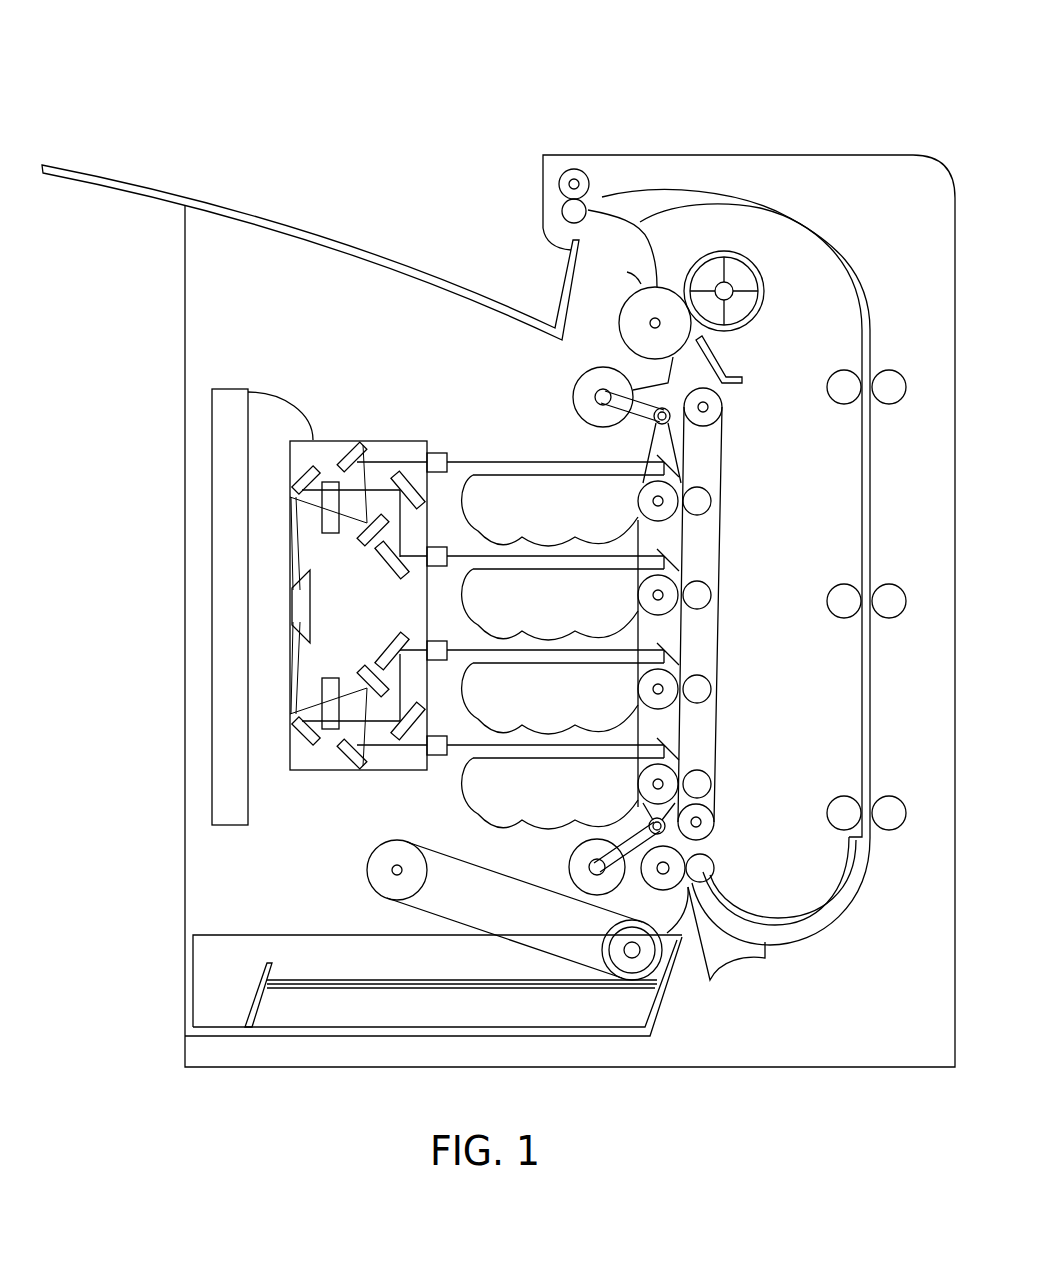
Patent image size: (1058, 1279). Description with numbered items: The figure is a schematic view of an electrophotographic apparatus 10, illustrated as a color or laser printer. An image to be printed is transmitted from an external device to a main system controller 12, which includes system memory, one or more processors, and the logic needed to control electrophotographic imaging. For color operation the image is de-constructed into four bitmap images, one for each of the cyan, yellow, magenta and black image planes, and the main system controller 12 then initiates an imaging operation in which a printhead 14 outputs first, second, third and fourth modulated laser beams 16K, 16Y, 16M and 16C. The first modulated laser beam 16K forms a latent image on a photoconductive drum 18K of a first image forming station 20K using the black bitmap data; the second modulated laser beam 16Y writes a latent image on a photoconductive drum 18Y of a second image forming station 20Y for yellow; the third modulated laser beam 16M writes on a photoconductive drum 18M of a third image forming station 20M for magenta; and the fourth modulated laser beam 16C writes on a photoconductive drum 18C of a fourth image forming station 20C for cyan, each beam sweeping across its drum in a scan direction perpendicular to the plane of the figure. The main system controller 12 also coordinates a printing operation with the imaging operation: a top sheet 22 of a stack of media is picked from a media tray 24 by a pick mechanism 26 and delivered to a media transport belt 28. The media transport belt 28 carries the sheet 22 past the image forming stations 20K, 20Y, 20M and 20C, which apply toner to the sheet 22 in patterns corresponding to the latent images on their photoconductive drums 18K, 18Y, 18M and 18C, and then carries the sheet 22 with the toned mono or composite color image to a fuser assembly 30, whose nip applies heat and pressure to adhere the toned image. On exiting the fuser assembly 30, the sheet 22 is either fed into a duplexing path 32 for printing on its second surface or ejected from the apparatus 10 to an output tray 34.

The apparatus 10 is at (720, 116).
The main system controller 12 is at (212, 426).
The printhead 14 is at (375, 441).
The fourth modulated laser beam 16C is at (521, 462).
The third modulated laser beam 16M is at (444, 547).
The second modulated laser beam 16Y is at (440, 648).
The first modulated laser beam 16K is at (440, 760).
The photoconductive drum 18C is at (638, 502).
The photoconductive drum 18M is at (638, 596).
The photoconductive drum 18Y is at (638, 690).
The photoconductive drum 18K is at (638, 786).
The fourth image forming station 20C is at (540, 517).
The third image forming station 20M is at (541, 612).
The second image forming station 20Y is at (542, 712).
The first image forming station 20K is at (540, 810).
The top sheet 22 is at (290, 978).
The media tray 24 is at (210, 978).
The pick mechanism 26 is at (383, 913).
The media transport belt 28 is at (718, 853).
The fuser assembly 30 is at (748, 386).
The duplexing path 32 is at (890, 516).
The output tray 34 is at (315, 198).